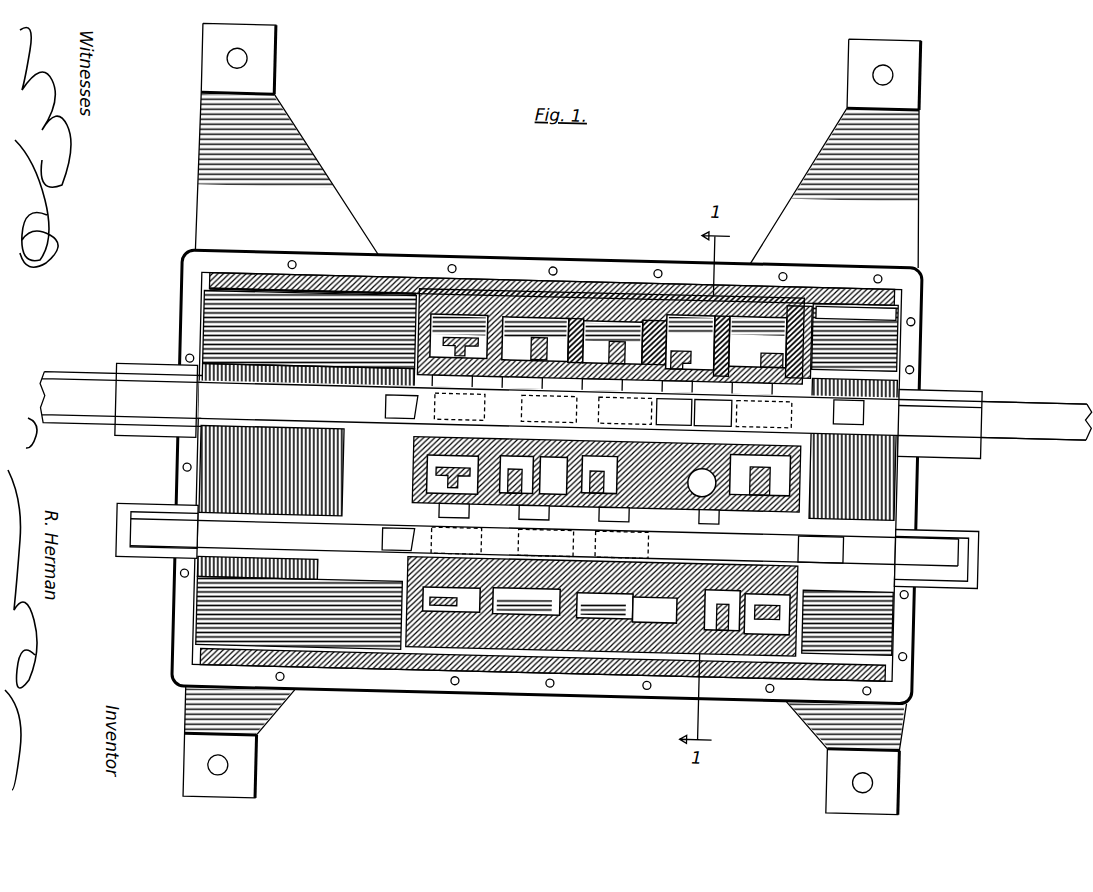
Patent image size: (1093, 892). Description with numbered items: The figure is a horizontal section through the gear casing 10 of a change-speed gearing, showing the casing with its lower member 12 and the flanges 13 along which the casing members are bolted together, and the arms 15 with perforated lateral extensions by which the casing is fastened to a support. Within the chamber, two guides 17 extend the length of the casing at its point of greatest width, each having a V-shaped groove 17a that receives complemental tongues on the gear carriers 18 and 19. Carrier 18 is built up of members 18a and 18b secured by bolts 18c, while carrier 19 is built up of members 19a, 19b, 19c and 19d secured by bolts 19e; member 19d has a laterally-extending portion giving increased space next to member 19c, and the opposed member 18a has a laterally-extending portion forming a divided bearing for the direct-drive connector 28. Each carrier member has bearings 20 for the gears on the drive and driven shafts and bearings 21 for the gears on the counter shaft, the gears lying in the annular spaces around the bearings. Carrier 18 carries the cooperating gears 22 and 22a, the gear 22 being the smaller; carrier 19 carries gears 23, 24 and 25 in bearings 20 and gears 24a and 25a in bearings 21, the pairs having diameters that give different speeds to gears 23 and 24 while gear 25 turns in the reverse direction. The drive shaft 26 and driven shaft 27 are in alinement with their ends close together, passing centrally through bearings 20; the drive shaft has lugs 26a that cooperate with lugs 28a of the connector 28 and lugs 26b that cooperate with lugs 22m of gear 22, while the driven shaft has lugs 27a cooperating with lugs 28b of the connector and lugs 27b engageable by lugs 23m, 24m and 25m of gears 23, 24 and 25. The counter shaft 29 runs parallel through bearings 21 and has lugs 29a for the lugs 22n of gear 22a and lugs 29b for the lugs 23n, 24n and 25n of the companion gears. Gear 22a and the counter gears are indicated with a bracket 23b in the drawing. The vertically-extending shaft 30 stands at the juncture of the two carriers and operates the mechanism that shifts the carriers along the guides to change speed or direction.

The gear casing 10 is at (900, 470).
The lower casing member 12 is at (200, 607).
The flanges 13 is at (615, 650).
The arms 15 is at (262, 770).
The guides 17 is at (405, 300).
The V-shaped groove 17a is at (360, 292).
The gear carrier 18 is at (685, 312).
The carrier member 18a is at (720, 300).
The carrier member 18b is at (820, 300).
The bolts 18c is at (792, 300).
The gear carrier 19 is at (502, 300).
The carrier member 19a is at (440, 305).
The carrier member 19b is at (468, 318).
The carrier member 19c is at (573, 305).
The carrier member 19d is at (650, 305).
The bolts 19e is at (408, 650).
The bearings 20 is at (845, 390).
The bearings 21 is at (820, 607).
The gear 22 is at (772, 353).
The gear 22a is at (750, 650).
The lugs 22m is at (818, 312).
The lugs 22n is at (759, 507).
The gear 23 is at (413, 460).
The armature arm 23b is at (427, 480).
The lugs 23m is at (459, 406).
The lugs 23n is at (456, 540).
The gear 24 is at (535, 320).
The gear 24a is at (515, 650).
The lugs 24m is at (549, 408).
The lugs 24n is at (546, 542).
The gear 25 is at (600, 322).
The gear 25a is at (592, 650).
The lugs 25m is at (625, 410).
The lugs 25n is at (622, 544).
The drive shaft 26 is at (1000, 392).
The radially-extending lugs 26a is at (713, 413).
The lugs 26b is at (850, 393).
The driven shaft 27 is at (68, 392).
The radially-extending lugs 27a is at (674, 412).
The lugs 27b is at (383, 410).
The direct-drive connector 28 is at (758, 341).
The lugs 28a is at (764, 414).
The inwardly-projecting lugs 28b is at (688, 351).
The counter shaft 29 is at (340, 530).
The radially-extending lugs 29a is at (819, 547).
The radially-extending lugs 29b is at (384, 542).
The vertically-extending shaft 30 is at (700, 494).